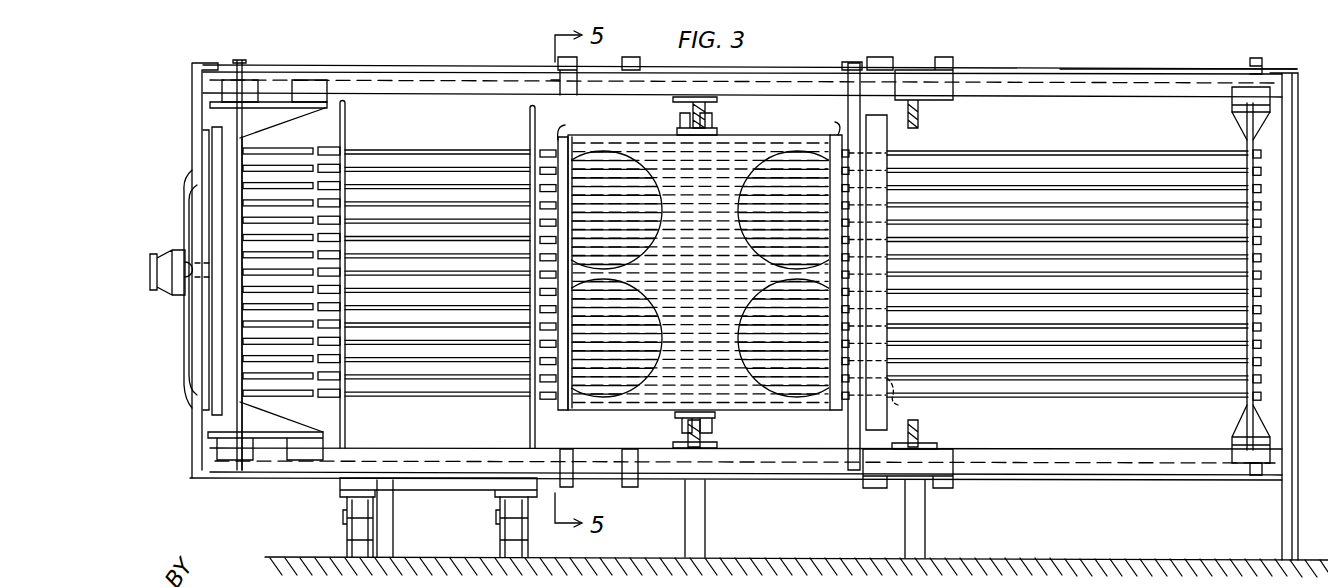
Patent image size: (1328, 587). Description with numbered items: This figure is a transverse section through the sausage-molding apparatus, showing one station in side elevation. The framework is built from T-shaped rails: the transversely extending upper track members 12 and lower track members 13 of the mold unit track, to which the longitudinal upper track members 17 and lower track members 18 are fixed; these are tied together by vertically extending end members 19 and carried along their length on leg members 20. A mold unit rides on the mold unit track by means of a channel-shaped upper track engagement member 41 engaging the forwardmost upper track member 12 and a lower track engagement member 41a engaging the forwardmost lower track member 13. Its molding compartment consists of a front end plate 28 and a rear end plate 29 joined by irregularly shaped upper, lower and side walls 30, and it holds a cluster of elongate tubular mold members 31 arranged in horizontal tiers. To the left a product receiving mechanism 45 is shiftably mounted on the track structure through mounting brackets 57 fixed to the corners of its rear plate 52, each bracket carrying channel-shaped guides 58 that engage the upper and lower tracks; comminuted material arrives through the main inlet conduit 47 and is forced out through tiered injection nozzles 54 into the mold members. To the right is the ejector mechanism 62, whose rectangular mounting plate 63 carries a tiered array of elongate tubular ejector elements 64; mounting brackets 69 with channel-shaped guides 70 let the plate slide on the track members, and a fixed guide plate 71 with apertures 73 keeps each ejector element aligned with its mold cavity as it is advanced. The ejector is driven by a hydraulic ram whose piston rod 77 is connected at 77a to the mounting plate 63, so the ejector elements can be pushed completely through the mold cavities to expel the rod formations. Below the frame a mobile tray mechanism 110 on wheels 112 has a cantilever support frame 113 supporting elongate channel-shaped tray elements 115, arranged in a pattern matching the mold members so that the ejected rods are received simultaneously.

The upper track members 12 is at (700, 112).
The lower track members 13 is at (688, 440).
The upper track members 17 is at (433, 90).
The lower track members 18 is at (1090, 450).
The end members 19 is at (193, 425).
The leg members 20 is at (385, 525).
The front end plate 28 is at (562, 258).
The rear end plate 29 is at (838, 134).
The upper, lower and side walls 30 is at (737, 137).
The tubular mold members 31 is at (763, 310).
The upper track engagement member 41 is at (680, 120).
The lower track engagement member 41a is at (705, 422).
The product receiving mechanism 45 is at (176, 151).
The main inlet conduit 47 is at (157, 253).
The rear plate 52 is at (238, 420).
The injection nozzles 54 is at (259, 166).
The mounting brackets 57 is at (255, 118).
The channel-shaped guides 58 is at (298, 90).
The ejector mechanism 62 is at (1181, 413).
The mounting plate 63 is at (1250, 181).
The tubular ejector elements 64 is at (1060, 190).
The mounting brackets 69 is at (1237, 120).
The channel-shaped guide 70 is at (1232, 98).
The guide plate 71 is at (878, 140).
The apertures 73 is at (899, 401).
The piston rod 77 is at (1068, 87).
The piston rod connection 77a is at (1265, 73).
The mobile tray mechanism 110 is at (474, 127).
The wheels 112 is at (512, 547).
The cantilever support frame 113 is at (465, 488).
The tray elements 115 is at (435, 168).